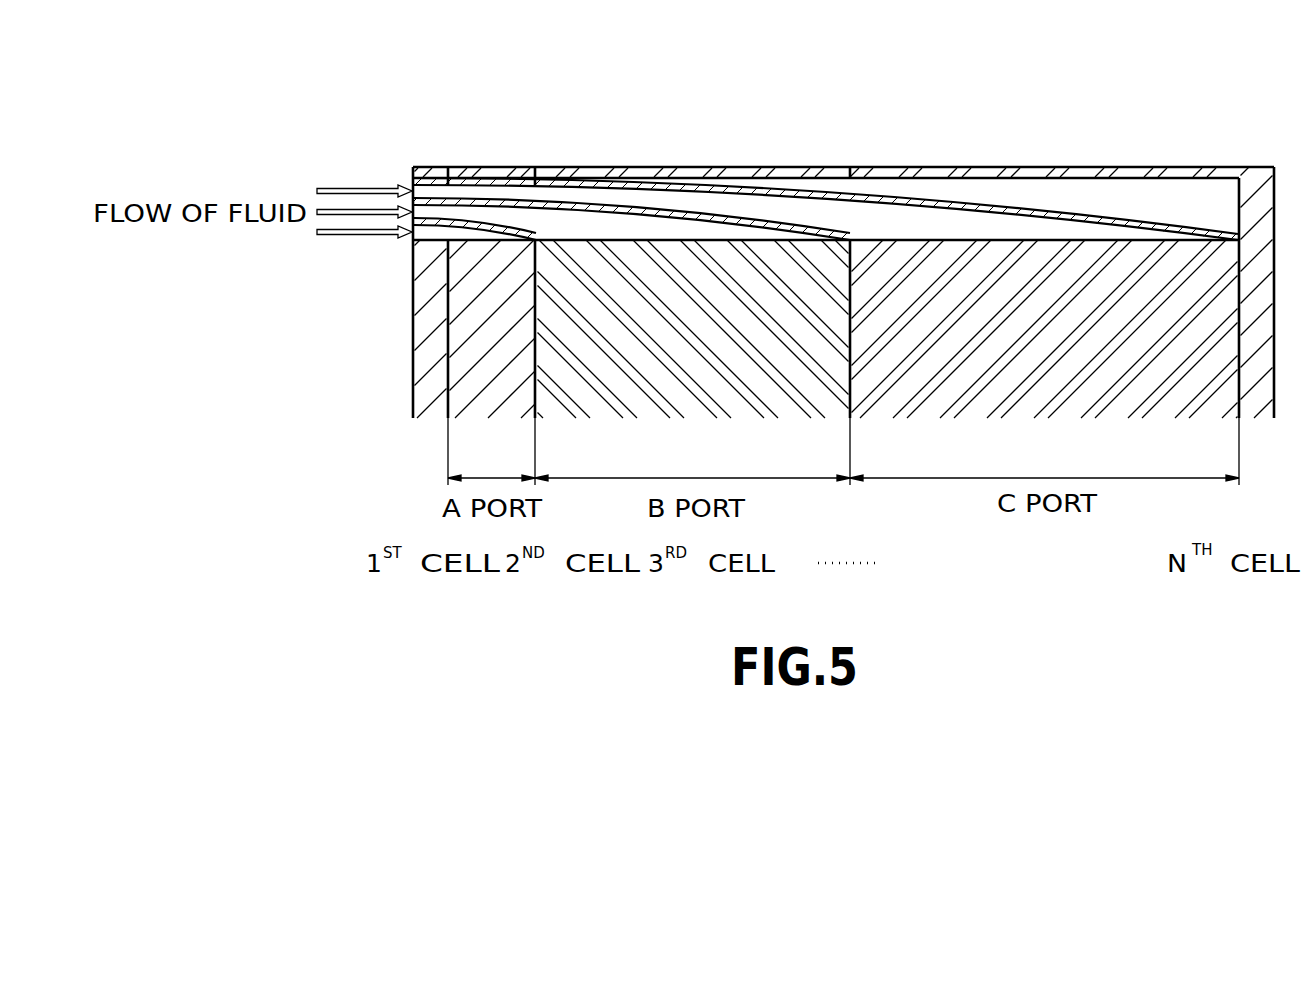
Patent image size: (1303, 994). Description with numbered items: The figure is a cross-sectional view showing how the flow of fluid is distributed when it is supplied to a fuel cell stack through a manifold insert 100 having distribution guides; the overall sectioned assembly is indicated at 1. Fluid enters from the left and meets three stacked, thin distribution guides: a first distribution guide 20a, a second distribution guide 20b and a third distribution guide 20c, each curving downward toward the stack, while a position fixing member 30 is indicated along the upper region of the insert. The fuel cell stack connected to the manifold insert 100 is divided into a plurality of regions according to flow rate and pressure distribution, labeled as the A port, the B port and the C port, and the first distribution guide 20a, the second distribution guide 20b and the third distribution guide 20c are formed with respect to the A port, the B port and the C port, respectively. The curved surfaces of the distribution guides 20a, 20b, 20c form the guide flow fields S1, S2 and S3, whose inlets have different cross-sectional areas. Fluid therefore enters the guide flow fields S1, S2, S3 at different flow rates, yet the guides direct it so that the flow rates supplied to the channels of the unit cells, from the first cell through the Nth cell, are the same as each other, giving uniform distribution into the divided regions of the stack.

The heat exchanger 1 is at (394, 377).
The first distribution guide 20a is at (443, 222).
The second distribution guide 20b is at (628, 207).
The third distribution guide 20c is at (927, 200).
The position fixing member 30 is at (1157, 202).
The manifold insert having distribution guides 100 is at (1004, 207).
The guide flow field S1 is at (464, 217).
The guide flow field S2 is at (573, 228).
The guide flow field S3 is at (816, 215).